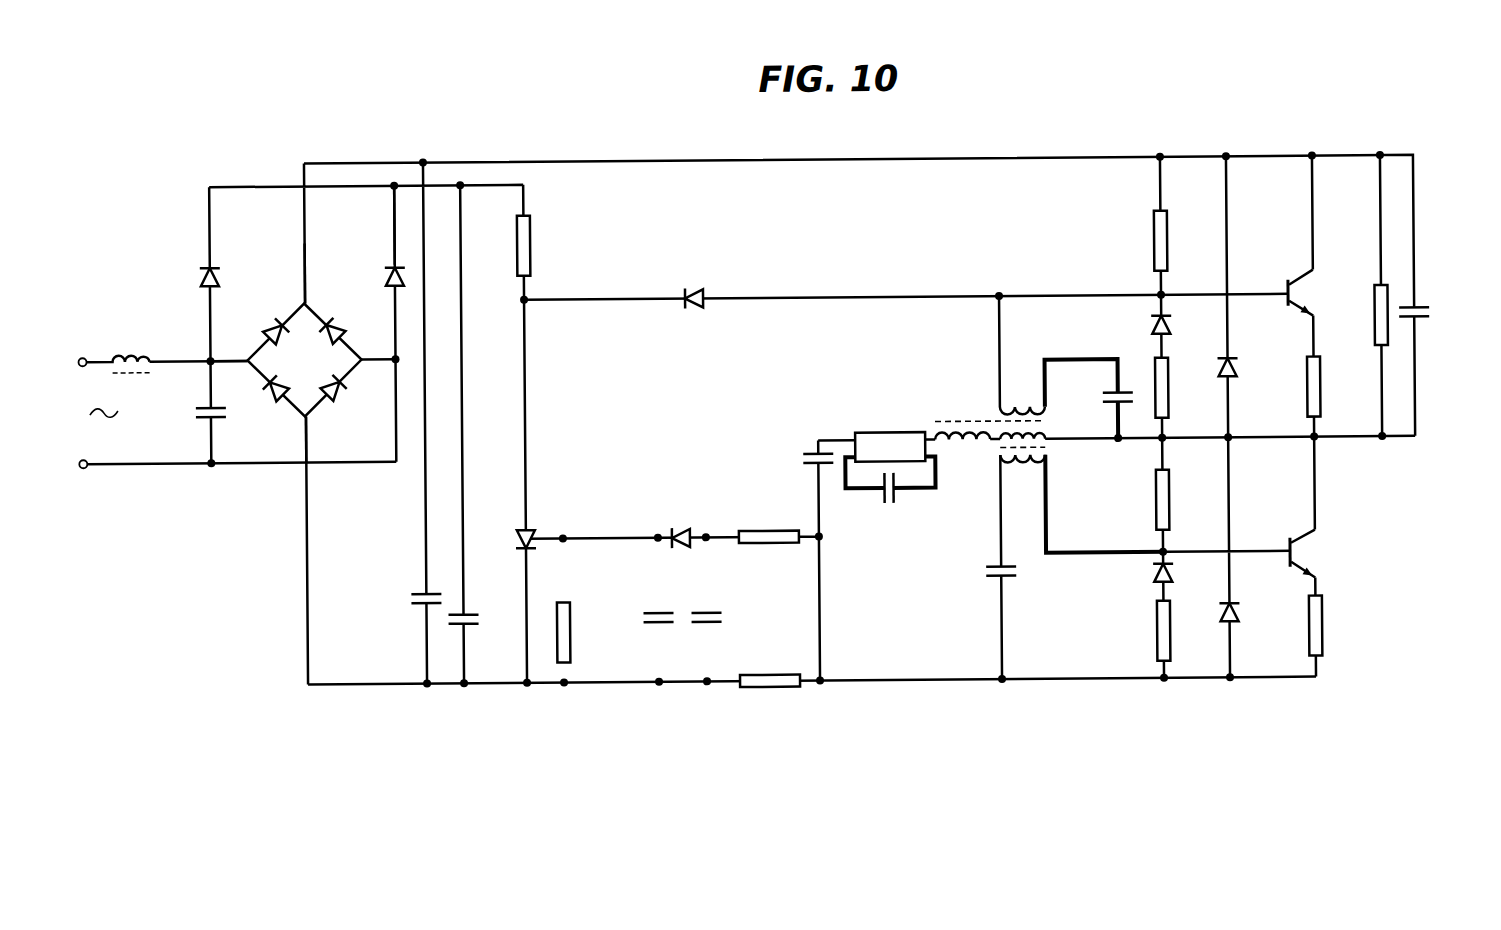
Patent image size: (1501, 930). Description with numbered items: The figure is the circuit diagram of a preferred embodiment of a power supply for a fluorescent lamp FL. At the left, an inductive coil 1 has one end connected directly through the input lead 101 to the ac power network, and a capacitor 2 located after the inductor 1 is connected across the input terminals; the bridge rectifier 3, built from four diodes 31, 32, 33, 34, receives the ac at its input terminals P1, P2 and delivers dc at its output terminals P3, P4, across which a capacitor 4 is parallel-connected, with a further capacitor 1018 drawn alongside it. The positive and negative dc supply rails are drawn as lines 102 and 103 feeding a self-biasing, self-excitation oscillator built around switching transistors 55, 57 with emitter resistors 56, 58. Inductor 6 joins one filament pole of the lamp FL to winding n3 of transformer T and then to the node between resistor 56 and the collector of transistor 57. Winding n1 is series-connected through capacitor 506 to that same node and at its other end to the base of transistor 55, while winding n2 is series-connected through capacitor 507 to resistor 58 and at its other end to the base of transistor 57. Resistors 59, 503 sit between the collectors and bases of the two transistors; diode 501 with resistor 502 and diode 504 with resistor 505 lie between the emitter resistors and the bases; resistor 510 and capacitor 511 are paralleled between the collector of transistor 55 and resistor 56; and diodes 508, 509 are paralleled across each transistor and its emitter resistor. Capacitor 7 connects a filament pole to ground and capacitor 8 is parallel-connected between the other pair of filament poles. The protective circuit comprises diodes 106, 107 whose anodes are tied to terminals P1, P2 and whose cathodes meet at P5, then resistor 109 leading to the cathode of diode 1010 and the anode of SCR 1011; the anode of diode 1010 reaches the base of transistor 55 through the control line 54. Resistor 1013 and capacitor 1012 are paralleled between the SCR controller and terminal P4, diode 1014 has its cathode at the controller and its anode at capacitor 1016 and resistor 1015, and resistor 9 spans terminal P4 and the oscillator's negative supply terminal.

The inductive coil 1 is at (142, 358).
The input line 101 is at (185, 360).
The capacitor 2 is at (205, 414).
The bridge rectifier 3 is at (298, 371).
The diode 31 is at (275, 325).
The diode 32 is at (332, 325).
The diode 33 is at (341, 394).
The diode 34 is at (273, 391).
The ac input terminal P1 is at (247, 356).
The ac input terminal P2 is at (360, 356).
The dc output terminal P3 is at (302, 298).
The negative dc output terminal P4 is at (308, 414).
The cathode junction P5 is at (393, 246).
The diode 106 is at (197, 279).
The diode 107 is at (381, 274).
The capacitor 4 is at (422, 594).
The capacitor 1018 is at (472, 625).
The resistor 109 is at (533, 248).
The positive supply line (52) 102 is at (891, 159).
The negative supply line (53) 103 is at (894, 680).
The control input terminal 54 is at (786, 297).
The diode 1010 is at (693, 290).
The SCR 1011 is at (508, 537).
The capacitor 1012 is at (650, 614).
The resistor 1013 is at (570, 629).
The diode 1014 is at (676, 530).
The resistor 1015 is at (757, 546).
The capacitor 1016 is at (712, 607).
The resistor 9 is at (772, 671).
The capacitor 7 is at (812, 449).
The fluorescent lamp FL is at (892, 434).
The capacitor 8 is at (882, 500).
The inductor 6 is at (962, 422).
The transformer T is at (990, 450).
The winding N1 n1 is at (1022, 355).
The winding N2 n2 is at (1022, 473).
The winding N3 n3 is at (1034, 424).
The capacitor 506 is at (1104, 406).
The capacitor 507 is at (995, 578).
The resistor 59 is at (1153, 243).
The diode 501 is at (1152, 330).
The resistor 502 is at (1170, 386).
The resistor 503 is at (1154, 493).
The diode 504 is at (1152, 570).
The resistor 505 is at (1154, 638).
The diode 508 is at (1240, 370).
The diode 509 is at (1240, 613).
The switching transistor 55 is at (1302, 276).
The resistor 56 is at (1320, 380).
The switching transistor 57 is at (1302, 538).
The resistor 58 is at (1322, 617).
The resistor 510 is at (1374, 307).
The capacitor 511 is at (1417, 308).